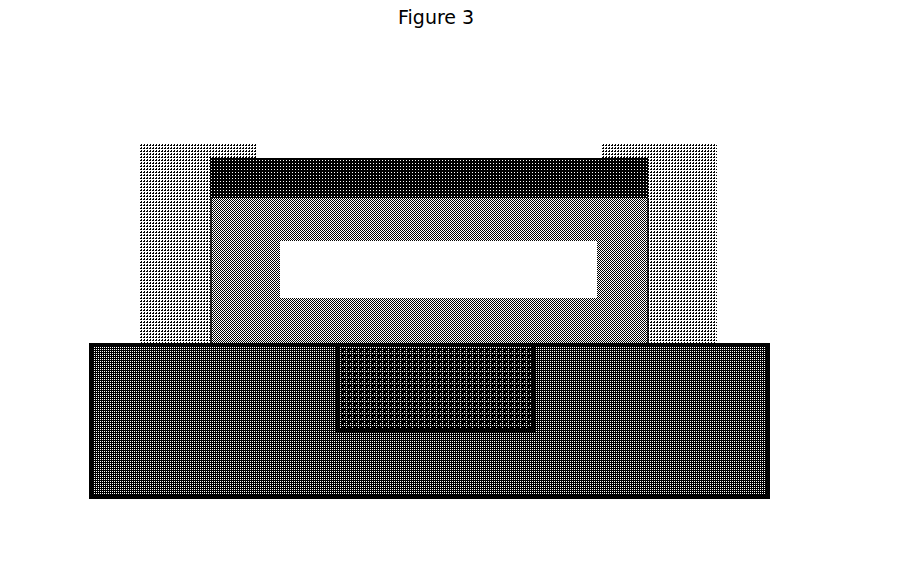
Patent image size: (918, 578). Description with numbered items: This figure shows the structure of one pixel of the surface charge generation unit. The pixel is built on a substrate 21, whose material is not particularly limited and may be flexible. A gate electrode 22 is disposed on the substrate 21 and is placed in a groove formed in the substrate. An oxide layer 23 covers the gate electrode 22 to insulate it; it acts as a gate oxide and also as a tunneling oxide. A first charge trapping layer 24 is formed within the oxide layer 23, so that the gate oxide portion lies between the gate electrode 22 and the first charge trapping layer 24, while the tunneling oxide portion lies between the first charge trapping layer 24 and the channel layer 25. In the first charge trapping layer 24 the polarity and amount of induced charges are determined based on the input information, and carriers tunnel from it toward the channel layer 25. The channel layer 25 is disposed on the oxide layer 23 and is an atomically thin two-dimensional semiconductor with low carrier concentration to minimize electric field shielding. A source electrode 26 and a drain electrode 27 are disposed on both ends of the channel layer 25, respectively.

The substrate 21 is at (705, 473).
The gate electrode 22 is at (420, 410).
The oxide layer 23 is at (620, 303).
The first charge trapping layer 24 is at (575, 262).
The channel layer 25 is at (435, 158).
The source electrode 26 is at (165, 217).
The drain electrode 27 is at (680, 195).